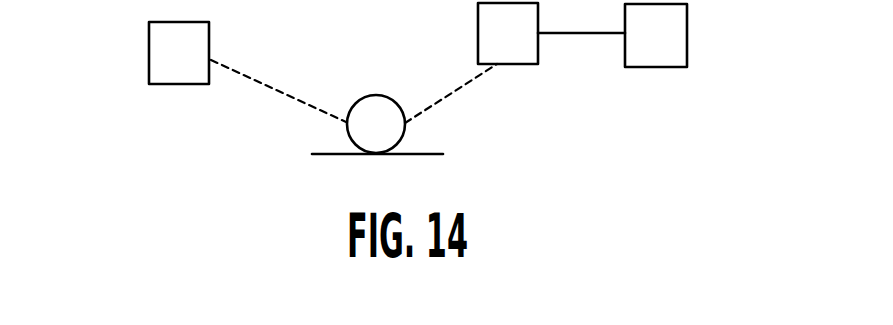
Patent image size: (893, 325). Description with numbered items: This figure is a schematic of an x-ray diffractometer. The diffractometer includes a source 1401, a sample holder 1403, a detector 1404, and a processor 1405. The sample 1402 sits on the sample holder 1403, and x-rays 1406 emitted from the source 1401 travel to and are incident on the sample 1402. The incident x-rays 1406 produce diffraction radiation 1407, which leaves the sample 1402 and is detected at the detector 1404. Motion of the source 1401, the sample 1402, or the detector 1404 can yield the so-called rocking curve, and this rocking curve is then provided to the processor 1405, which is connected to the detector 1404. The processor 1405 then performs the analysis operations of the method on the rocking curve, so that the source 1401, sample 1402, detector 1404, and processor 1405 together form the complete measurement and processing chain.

The source 1401 is at (149, 57).
The sample 1402 is at (374, 155).
The sample holder 1403 is at (320, 153).
The detector 1404 is at (538, 65).
The processor 1405 is at (687, 40).
The x-rays 1406 is at (252, 74).
The diffraction radiation 1407 is at (457, 92).